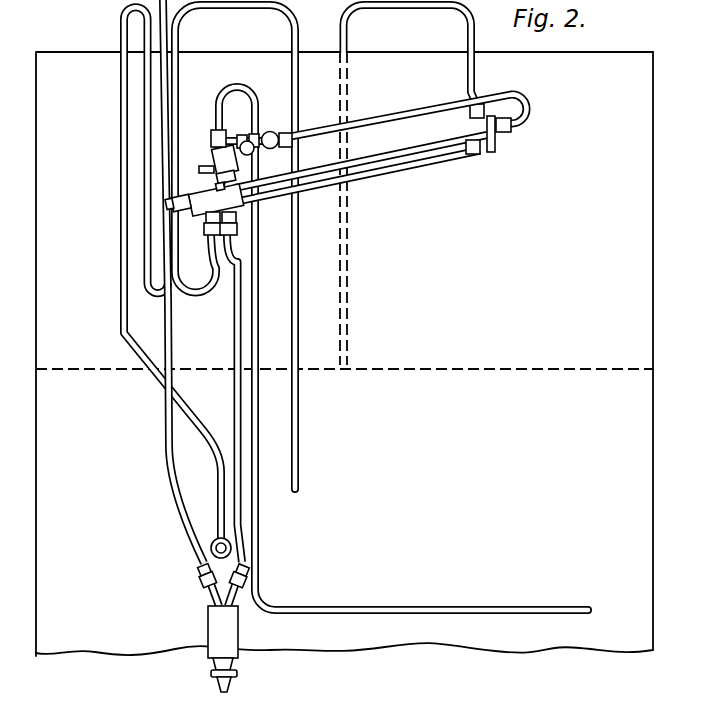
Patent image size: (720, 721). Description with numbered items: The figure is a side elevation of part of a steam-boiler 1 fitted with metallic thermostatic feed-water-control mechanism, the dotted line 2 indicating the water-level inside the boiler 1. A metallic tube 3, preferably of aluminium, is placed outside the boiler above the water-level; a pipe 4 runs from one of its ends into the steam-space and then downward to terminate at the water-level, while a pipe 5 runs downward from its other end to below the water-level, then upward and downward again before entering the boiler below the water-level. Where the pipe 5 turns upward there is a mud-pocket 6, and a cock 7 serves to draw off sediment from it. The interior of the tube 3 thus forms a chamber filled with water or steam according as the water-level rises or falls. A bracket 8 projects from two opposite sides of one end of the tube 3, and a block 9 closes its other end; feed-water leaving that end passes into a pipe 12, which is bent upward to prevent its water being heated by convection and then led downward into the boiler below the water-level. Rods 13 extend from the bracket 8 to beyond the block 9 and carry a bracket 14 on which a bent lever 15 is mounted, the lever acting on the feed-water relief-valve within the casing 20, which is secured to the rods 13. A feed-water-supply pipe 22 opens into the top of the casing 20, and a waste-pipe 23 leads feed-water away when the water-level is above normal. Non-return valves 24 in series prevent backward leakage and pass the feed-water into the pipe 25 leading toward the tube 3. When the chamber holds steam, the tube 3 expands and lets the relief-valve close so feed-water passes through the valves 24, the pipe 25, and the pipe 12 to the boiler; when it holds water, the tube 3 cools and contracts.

The steam-boiler 1 is at (40, 105).
The water-level 2 is at (58, 369).
The metallic tube 3 is at (376, 173).
The pipe 4 is at (476, 62).
The pipe 5 is at (212, 3).
The mud-pocket 6 is at (220, 631).
The cock 7 is at (236, 675).
The bracket 8 is at (493, 138).
The block 9 is at (201, 222).
The pipe 12 is at (121, 36).
The rods 13 is at (429, 147).
The bracket 14 is at (172, 205).
The bent lever 15 is at (203, 193).
The casing 20 is at (229, 147).
The feed-water-supply pipe 22 is at (232, 86).
The waste-pipe 23 is at (207, 167).
The non-return valves 24 is at (270, 131).
The pipe 25 is at (312, 128).